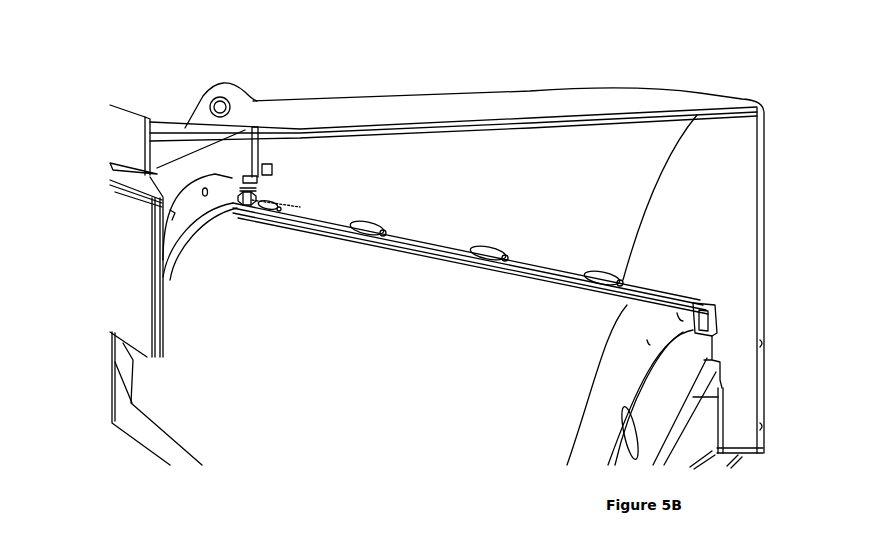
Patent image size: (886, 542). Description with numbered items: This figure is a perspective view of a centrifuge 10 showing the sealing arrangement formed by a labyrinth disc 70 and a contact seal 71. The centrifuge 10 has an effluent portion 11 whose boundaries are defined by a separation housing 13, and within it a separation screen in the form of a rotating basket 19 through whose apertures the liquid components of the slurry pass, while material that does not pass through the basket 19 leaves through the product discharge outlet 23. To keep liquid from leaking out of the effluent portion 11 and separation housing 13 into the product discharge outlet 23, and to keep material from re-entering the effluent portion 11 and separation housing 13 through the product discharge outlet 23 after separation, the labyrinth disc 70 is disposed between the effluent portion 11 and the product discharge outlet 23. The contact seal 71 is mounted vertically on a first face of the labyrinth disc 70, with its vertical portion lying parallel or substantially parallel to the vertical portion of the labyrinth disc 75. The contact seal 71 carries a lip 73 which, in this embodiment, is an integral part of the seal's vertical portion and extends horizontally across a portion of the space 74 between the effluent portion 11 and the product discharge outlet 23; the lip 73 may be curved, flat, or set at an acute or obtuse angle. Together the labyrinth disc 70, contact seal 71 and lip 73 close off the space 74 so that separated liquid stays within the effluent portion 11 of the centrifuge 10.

The centrifuge 10 is at (487, 376).
The effluent portion 11 is at (582, 152).
The separation housing 13 is at (263, 163).
The basket 19 is at (443, 253).
The product discharge outlet 23 is at (140, 177).
The labyrinth disc 70 is at (190, 188).
The contact seal 71 is at (250, 176).
The lip 73 is at (232, 178).
The space 74 is at (260, 170).
The vertical portion of the labyrinth disc 75 is at (247, 190).